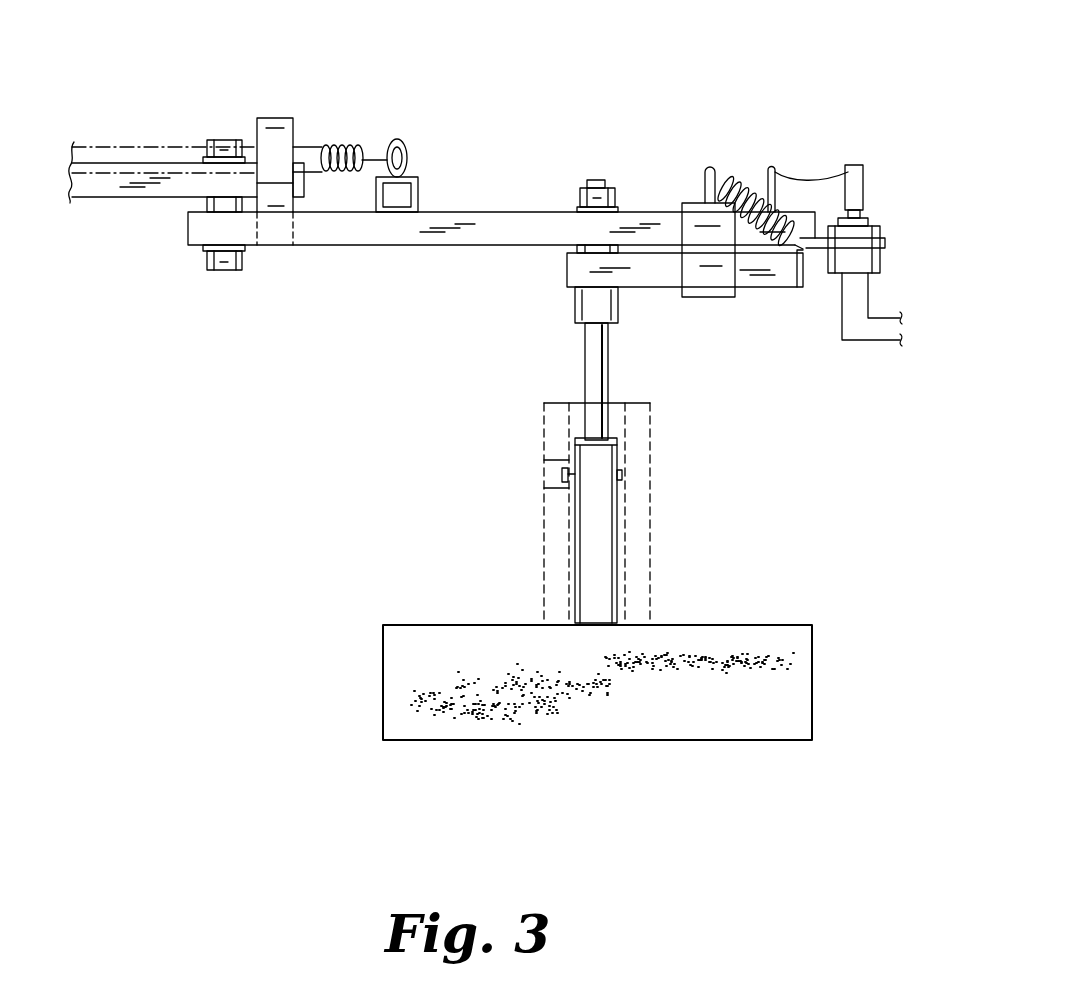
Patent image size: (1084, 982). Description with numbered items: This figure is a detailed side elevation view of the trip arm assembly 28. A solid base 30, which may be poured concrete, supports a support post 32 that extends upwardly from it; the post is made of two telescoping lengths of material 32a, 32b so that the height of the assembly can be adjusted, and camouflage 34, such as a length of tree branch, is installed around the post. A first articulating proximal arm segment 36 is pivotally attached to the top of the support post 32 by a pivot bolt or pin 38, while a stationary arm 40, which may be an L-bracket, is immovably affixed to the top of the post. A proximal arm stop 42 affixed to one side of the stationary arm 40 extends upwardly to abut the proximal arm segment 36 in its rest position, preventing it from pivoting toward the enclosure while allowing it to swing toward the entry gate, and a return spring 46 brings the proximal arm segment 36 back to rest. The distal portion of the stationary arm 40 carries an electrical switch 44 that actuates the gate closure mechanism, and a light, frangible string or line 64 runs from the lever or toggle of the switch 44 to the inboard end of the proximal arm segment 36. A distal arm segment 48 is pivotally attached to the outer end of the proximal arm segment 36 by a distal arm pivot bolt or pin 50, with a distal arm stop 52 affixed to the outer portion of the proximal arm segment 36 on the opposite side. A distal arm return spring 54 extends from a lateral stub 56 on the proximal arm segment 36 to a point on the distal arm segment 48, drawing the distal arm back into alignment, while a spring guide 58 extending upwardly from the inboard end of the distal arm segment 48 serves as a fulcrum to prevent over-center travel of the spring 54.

The trip arm assembly 28 is at (236, 468).
The solid base 30 is at (456, 666).
The support post 32 is at (556, 380).
The telescoping length of material 32a is at (620, 540).
The telescoping length of material 32b is at (610, 372).
The camouflage 34 is at (544, 530).
The proximal arm segment 36 is at (467, 247).
The pivot bolt or pin 38 is at (596, 178).
The stationary arm 40 is at (650, 289).
The proximal arm stop 42 is at (682, 204).
The electrical switch 44 is at (869, 216).
The return spring 46 is at (741, 182).
The distal arm segment 48 is at (113, 199).
The distal arm pivot bolt or pin 50 is at (220, 138).
The distal arm stop 52 is at (305, 198).
The distal arm return spring 54 is at (337, 146).
The lateral stub 56 is at (419, 196).
The spring guide 58 is at (280, 118).
The string or line 64 is at (808, 180).